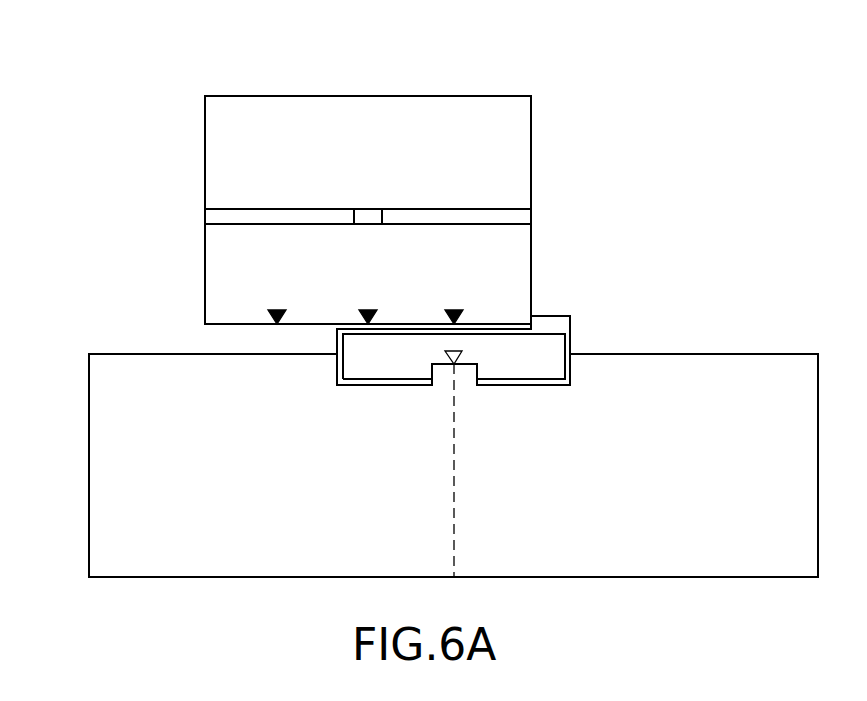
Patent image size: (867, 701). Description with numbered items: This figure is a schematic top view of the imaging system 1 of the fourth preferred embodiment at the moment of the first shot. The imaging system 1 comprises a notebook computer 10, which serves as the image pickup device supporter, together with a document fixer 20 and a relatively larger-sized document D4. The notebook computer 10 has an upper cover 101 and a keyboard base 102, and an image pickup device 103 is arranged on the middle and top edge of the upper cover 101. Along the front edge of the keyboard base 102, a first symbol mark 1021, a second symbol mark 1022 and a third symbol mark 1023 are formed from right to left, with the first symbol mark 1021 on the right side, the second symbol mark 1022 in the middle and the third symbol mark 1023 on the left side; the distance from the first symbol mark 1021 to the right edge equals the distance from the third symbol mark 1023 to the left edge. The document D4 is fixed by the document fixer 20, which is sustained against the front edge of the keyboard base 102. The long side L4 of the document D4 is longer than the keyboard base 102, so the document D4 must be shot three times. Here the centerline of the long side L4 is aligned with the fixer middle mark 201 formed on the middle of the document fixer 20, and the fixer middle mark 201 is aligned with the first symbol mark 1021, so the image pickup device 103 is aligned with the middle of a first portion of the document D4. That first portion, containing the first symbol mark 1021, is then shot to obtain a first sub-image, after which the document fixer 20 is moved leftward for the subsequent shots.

The imaging system 1 is at (505, 45).
The notebook computer 10 is at (309, 98).
The upper cover 101 is at (514, 155).
The keyboard base 102 is at (223, 300).
The image pickup device 103 is at (370, 218).
The first symbol mark 1021 is at (454, 310).
The second symbol mark 1022 is at (368, 310).
The third symbol mark 1023 is at (277, 310).
The document fixer 20 is at (556, 364).
The fixer middle mark 201 is at (454, 351).
The document D4 is at (104, 483).
The long side L4 is at (573, 578).